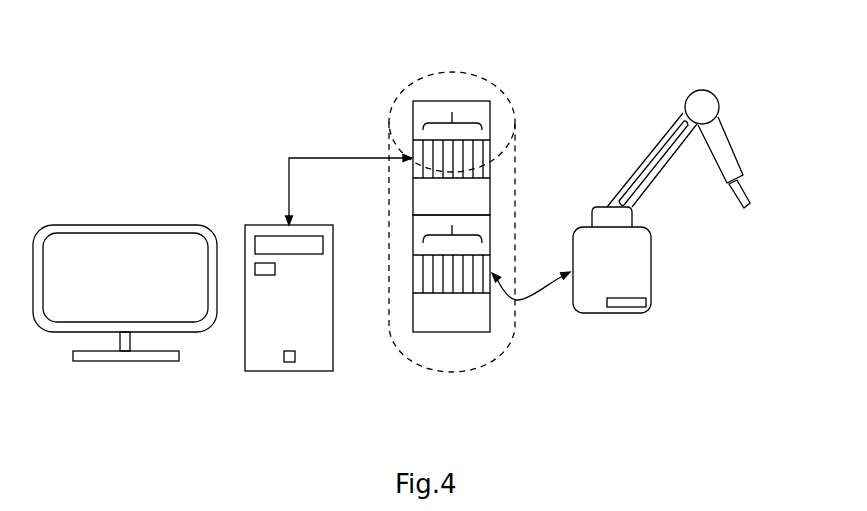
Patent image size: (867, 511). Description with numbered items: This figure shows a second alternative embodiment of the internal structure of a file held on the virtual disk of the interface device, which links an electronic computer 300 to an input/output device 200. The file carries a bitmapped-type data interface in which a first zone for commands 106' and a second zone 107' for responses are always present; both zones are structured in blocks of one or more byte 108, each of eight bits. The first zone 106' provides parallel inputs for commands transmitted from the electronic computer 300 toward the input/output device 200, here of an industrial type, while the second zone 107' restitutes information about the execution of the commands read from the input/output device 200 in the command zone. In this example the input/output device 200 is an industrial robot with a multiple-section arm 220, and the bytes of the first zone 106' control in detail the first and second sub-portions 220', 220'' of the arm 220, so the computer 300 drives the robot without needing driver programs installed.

The first zone for commands 106' is at (389, 145).
The second zone for responses 107' is at (413, 273).
The byte block 108 is at (468, 104).
The input/output device 200 is at (597, 290).
The arm 220 is at (659, 155).
The first sub-portion of the arm 220' is at (627, 122).
The second sub-portion of the arm 220'' is at (729, 112).
The electronic computer 300 is at (261, 331).